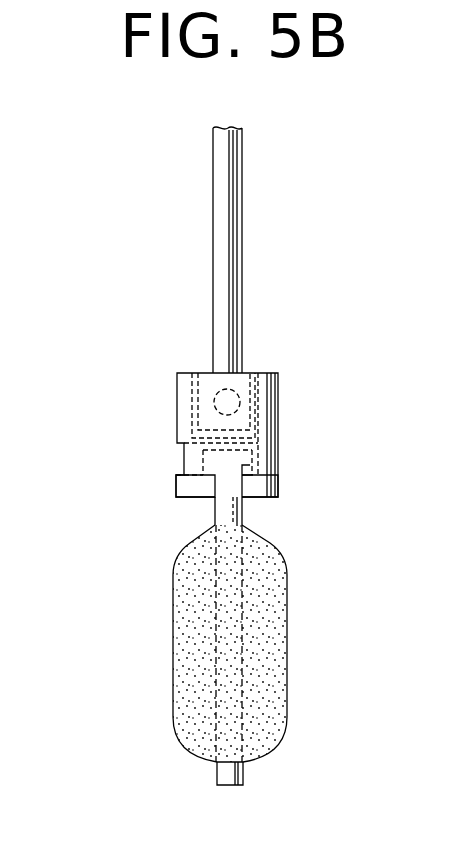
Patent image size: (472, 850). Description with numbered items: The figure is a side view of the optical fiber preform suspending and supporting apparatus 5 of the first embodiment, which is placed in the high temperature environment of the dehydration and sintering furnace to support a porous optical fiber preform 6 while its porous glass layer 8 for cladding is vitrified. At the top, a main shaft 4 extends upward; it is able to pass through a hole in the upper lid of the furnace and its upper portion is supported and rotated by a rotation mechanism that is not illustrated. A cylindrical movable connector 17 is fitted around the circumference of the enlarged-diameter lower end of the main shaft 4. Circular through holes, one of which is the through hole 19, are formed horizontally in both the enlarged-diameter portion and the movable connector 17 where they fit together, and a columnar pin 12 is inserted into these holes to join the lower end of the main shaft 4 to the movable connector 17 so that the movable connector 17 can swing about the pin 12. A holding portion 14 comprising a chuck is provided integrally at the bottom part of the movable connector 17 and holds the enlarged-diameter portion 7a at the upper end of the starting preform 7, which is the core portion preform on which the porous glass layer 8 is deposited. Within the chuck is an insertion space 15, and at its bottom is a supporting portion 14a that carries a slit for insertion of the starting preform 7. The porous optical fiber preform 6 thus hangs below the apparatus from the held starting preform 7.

The main shaft 4 is at (226, 218).
The optical fiber preform suspending and supporting apparatus 5 is at (278, 371).
The columnar pin 12 is at (245, 380).
The through hole 19 is at (214, 405).
The movable connector 17 is at (278, 400).
The insertion space 15 is at (183, 456).
The enlarged-diameter portion 7a is at (262, 460).
The holding portion 14 is at (278, 486).
The supporting portion 14a is at (192, 498).
The porous optical fiber preform 6 is at (174, 650).
The starting preform 7 is at (233, 650).
The porous glass layer 8 is at (175, 700).